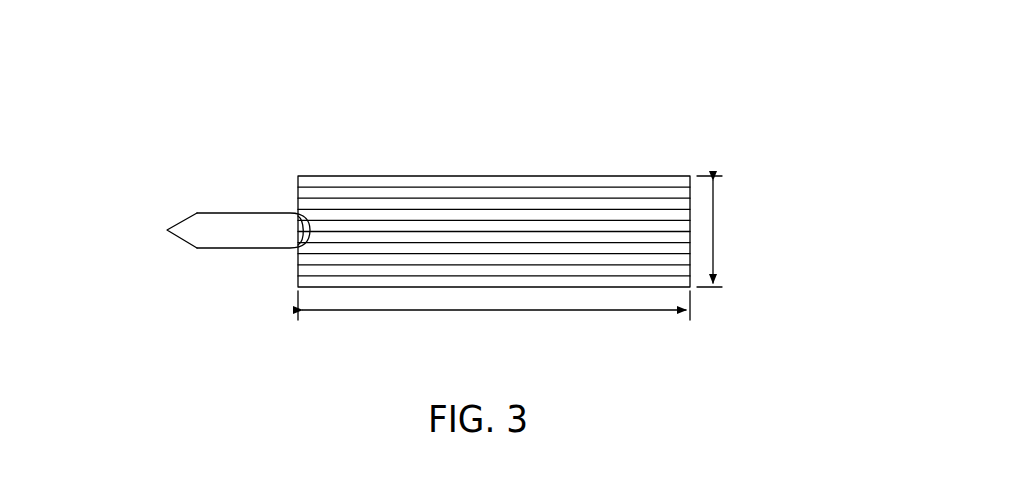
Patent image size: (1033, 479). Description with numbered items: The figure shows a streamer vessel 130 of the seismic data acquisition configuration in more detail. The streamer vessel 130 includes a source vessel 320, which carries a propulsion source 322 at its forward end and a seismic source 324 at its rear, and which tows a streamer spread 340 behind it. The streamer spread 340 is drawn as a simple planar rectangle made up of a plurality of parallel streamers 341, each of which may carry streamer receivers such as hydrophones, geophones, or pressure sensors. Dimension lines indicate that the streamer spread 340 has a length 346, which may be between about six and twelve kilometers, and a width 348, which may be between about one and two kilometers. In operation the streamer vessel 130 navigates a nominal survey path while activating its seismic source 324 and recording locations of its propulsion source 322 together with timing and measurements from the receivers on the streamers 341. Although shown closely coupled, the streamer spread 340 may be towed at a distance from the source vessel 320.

The streamer vessel 130 is at (437, 185).
The source vessel 320 is at (198, 188).
The propulsion source 322 is at (172, 229).
The seismic source 324 is at (299, 205).
The streamer spread 340 is at (486, 178).
The streamers 341 is at (572, 241).
The length 346 is at (520, 311).
The width 348 is at (716, 229).